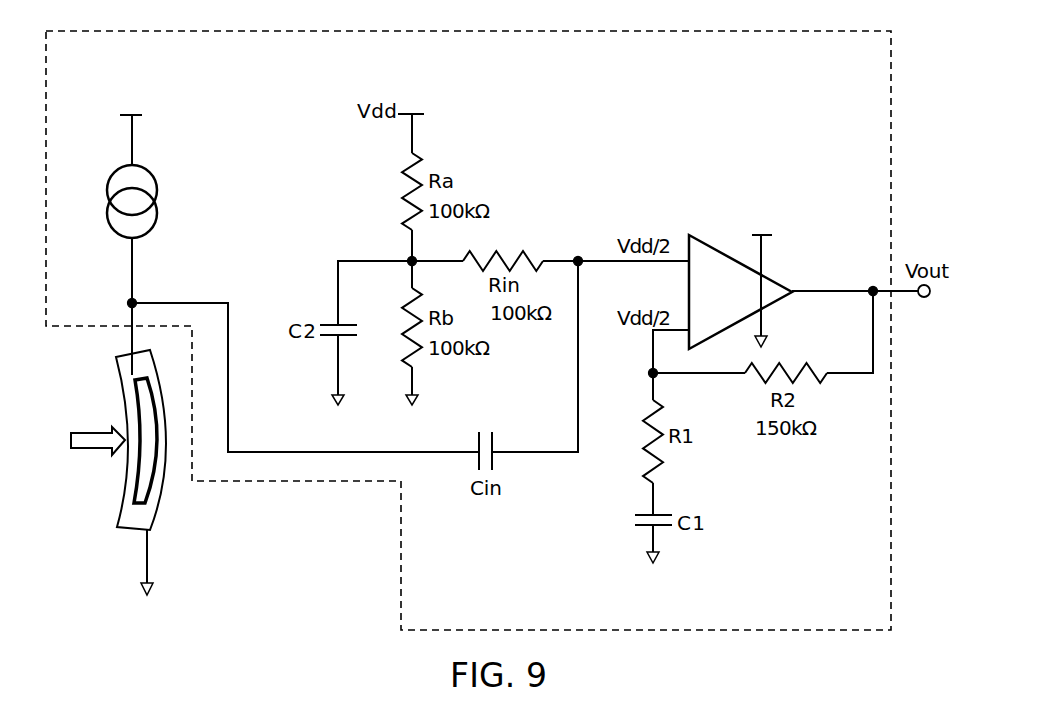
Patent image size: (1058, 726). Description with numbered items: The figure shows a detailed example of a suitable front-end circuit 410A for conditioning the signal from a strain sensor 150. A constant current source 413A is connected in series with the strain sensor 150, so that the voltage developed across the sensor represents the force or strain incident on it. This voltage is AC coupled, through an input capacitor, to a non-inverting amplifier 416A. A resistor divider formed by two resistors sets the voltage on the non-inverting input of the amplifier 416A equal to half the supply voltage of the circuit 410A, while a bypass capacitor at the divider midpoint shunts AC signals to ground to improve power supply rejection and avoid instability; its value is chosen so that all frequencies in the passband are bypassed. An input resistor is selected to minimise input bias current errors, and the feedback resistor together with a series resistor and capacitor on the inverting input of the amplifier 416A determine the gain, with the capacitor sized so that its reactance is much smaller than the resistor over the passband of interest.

The front-end circuit 410A is at (812, 84).
The constant current source 413A is at (145, 167).
The strain sensor 150 is at (116, 527).
The non-inverting amplifier 416A is at (755, 290).